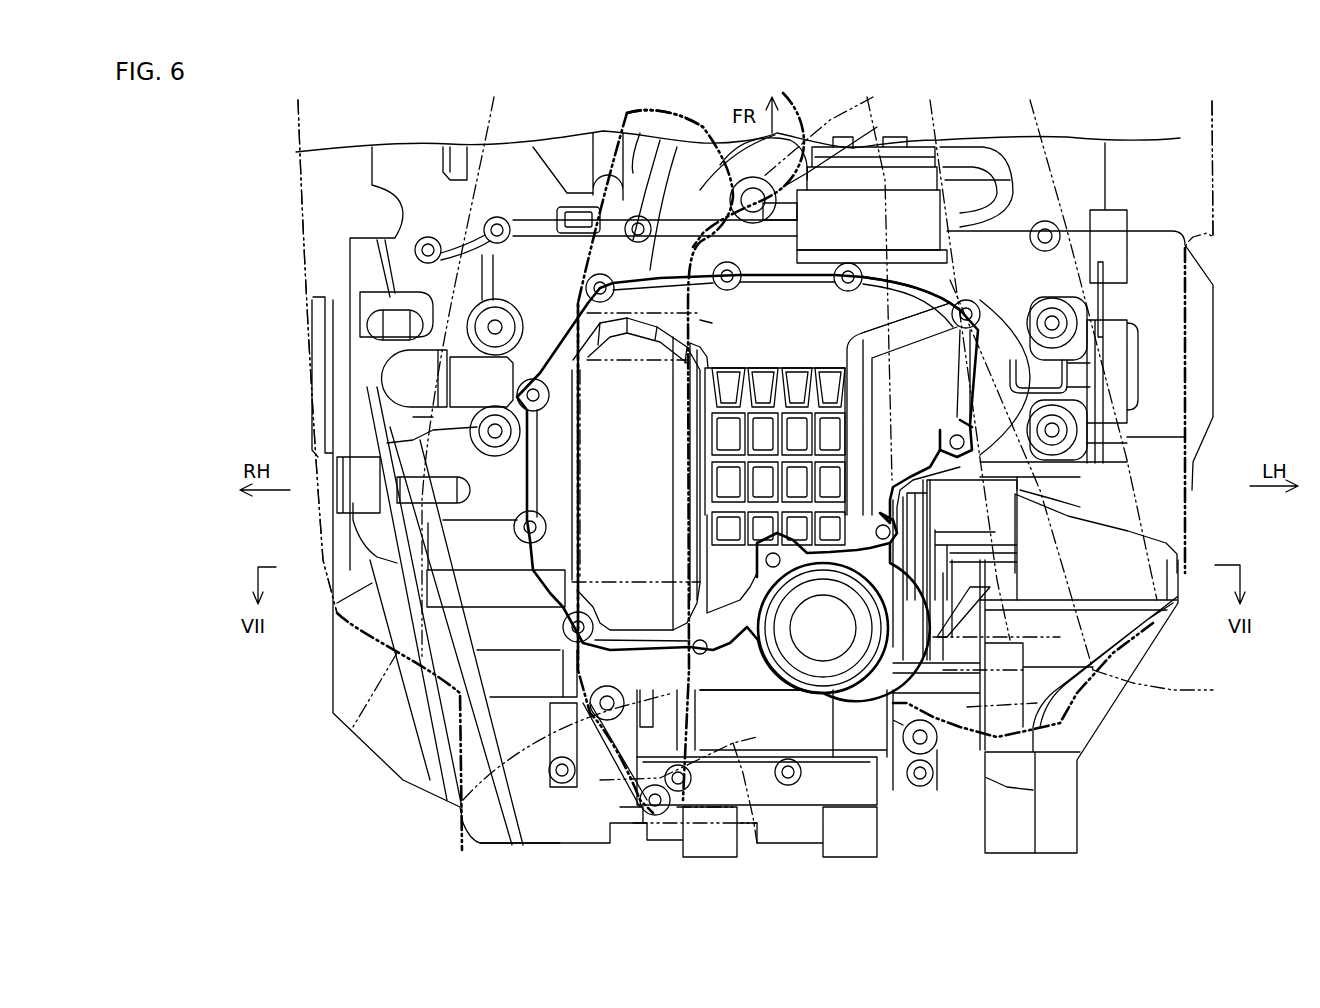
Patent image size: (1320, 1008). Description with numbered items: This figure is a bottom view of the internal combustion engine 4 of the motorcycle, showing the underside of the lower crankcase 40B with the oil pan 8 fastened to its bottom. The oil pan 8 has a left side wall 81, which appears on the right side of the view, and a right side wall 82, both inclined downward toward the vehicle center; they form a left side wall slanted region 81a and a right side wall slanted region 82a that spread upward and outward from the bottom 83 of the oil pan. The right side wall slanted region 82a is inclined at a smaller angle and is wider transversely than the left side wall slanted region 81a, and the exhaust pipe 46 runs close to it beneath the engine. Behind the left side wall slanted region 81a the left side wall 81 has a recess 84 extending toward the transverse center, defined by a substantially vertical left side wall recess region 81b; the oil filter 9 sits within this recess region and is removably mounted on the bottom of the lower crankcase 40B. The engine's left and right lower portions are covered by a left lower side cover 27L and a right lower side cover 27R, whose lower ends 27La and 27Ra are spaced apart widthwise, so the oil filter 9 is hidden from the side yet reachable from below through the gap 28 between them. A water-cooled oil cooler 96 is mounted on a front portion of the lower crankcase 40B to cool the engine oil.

The internal combustion engine 4 is at (1228, 190).
The oil pan 8 is at (732, 97).
The oil filter 9 is at (867, 690).
The right lower side cover 27R is at (347, 733).
The left lower side cover 27L is at (1140, 687).
The lower end of right lower side cover 27Ra is at (567, 550).
The lower end of left lower side cover 27La is at (885, 293).
The gap 28 is at (759, 353).
The lower crankcase 40B is at (757, 684).
The exhaust pipe 46 is at (705, 323).
The left side wall 81 is at (825, 518).
The left side wall slanted region 81a is at (932, 398).
The left side wall recess region 81b is at (773, 657).
The right side wall 82 is at (690, 443).
The right side wall slanted region 82a is at (623, 423).
The bottom of the oil pan 83 is at (770, 418).
The recess 84 is at (876, 567).
The water-cooled oil cooler 96 is at (927, 167).